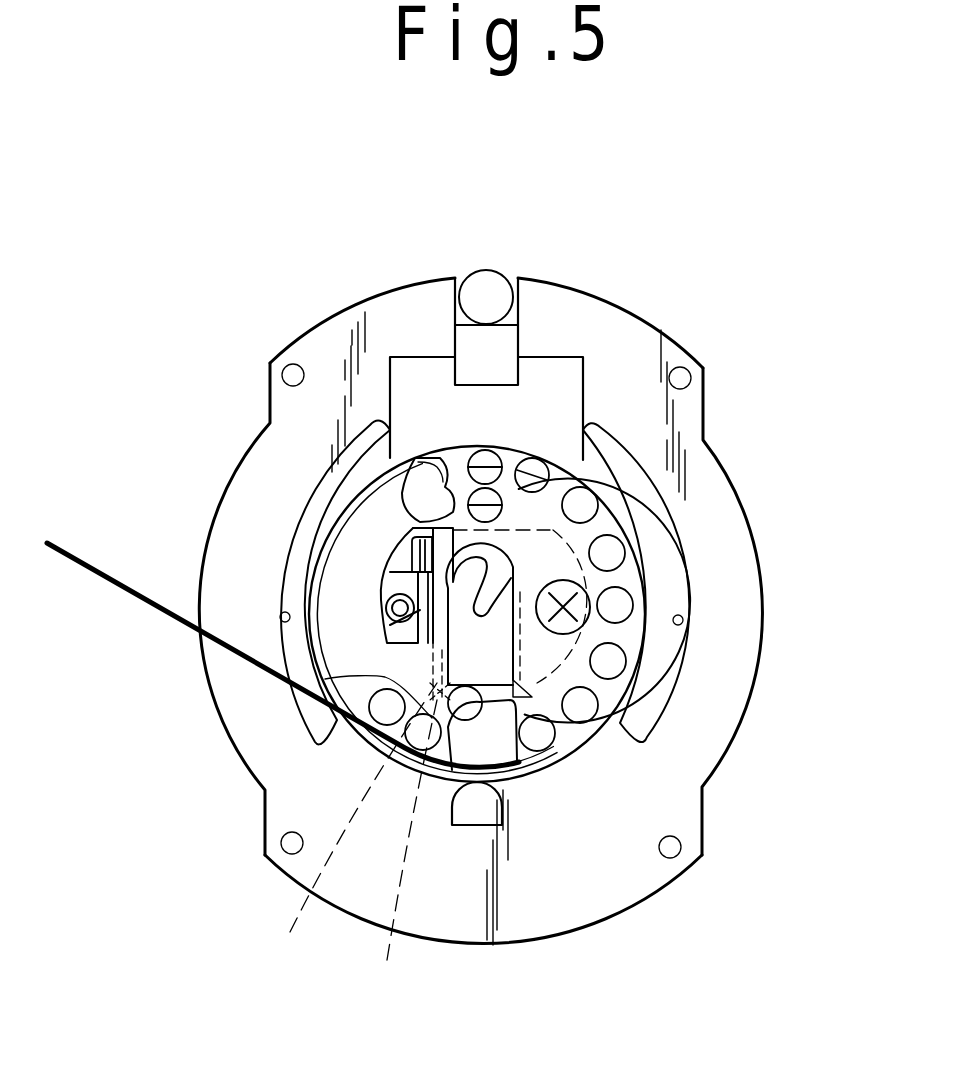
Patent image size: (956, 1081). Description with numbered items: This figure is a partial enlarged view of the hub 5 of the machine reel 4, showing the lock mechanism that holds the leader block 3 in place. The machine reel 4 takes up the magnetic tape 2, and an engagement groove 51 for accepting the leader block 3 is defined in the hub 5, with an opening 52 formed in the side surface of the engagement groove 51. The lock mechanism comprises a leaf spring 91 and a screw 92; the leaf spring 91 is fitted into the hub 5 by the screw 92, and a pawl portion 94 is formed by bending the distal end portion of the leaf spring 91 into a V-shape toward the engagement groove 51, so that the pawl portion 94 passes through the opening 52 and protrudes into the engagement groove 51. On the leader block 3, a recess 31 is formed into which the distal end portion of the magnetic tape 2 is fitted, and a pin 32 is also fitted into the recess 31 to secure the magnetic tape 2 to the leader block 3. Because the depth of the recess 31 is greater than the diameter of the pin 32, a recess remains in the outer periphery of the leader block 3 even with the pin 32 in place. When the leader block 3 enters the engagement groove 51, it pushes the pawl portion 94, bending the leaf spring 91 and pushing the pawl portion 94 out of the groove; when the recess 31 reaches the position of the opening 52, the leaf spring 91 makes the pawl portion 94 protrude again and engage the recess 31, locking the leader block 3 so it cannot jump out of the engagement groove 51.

The magnetic tape 2 is at (168, 622).
The leader block 3 is at (500, 752).
The recess 31 is at (543, 750).
The pin 32 is at (465, 707).
The machine reel 4 is at (588, 345).
The hub 5 is at (627, 633).
The engagement groove 51 is at (455, 530).
The opening 52 is at (353, 832).
The leaf spring 91 is at (418, 640).
The screw 92 is at (412, 560).
The pawl portion 94 is at (395, 855).